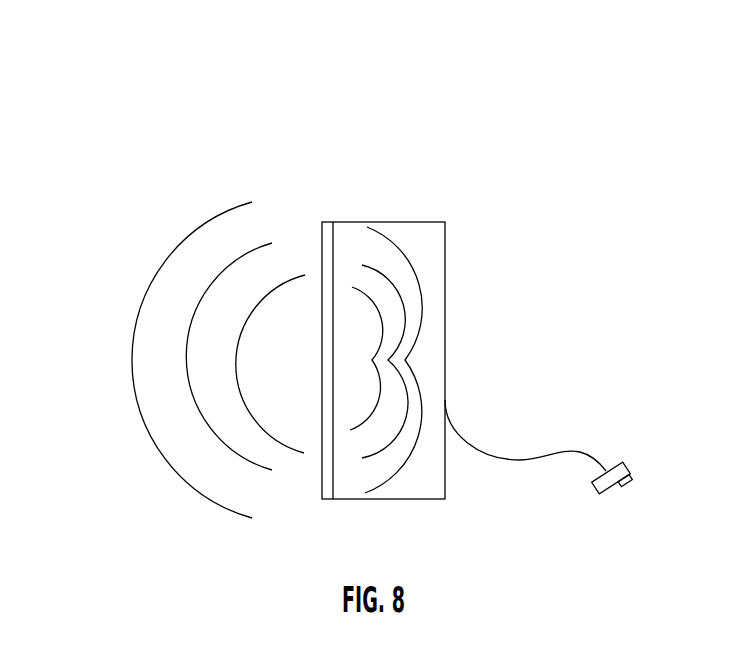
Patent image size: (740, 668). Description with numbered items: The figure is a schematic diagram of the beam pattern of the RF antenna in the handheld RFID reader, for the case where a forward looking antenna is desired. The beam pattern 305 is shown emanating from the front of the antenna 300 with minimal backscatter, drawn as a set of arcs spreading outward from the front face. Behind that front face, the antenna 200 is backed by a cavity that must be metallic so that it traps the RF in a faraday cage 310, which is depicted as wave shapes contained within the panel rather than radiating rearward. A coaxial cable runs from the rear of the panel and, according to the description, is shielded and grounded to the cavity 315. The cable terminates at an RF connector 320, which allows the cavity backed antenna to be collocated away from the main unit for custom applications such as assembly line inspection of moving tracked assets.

The antenna 300 is at (158, 141).
The beam pattern 305 is at (153, 252).
The acoustic panel 200 is at (381, 211).
The faraday cage 310 is at (428, 360).
The cavity 315 is at (556, 447).
The RF connector 320 is at (633, 472).